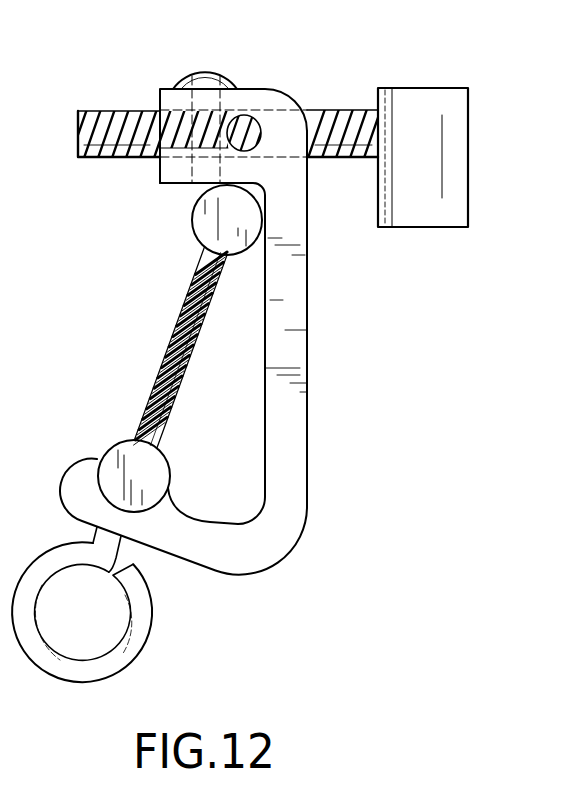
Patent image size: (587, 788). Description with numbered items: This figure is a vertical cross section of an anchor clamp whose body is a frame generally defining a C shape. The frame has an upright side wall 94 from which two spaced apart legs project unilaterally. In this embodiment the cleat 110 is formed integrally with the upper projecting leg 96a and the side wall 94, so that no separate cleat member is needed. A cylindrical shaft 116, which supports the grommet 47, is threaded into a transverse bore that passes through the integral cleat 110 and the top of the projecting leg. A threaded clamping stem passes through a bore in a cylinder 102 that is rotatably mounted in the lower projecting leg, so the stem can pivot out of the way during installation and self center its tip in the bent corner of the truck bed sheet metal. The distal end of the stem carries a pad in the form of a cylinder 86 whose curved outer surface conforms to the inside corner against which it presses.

The grommet 47 is at (455, 110).
The cylinder pad 86 is at (252, 210).
The side wall 94 is at (295, 420).
The projecting leg 96a is at (173, 174).
The cylinder 102 is at (110, 463).
The integral cleat 110 is at (177, 97).
The cylindrical shaft 116 is at (93, 108).